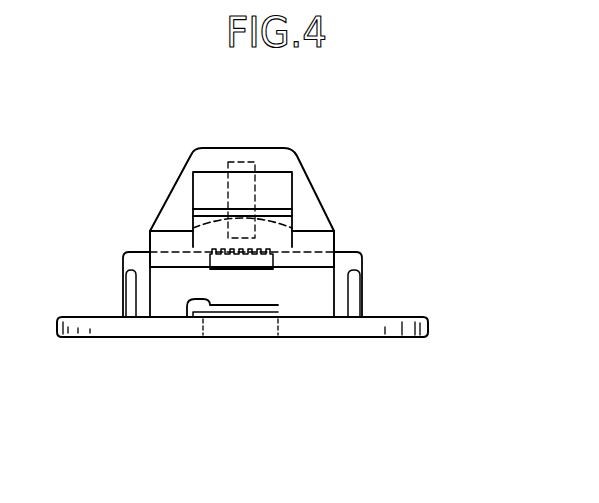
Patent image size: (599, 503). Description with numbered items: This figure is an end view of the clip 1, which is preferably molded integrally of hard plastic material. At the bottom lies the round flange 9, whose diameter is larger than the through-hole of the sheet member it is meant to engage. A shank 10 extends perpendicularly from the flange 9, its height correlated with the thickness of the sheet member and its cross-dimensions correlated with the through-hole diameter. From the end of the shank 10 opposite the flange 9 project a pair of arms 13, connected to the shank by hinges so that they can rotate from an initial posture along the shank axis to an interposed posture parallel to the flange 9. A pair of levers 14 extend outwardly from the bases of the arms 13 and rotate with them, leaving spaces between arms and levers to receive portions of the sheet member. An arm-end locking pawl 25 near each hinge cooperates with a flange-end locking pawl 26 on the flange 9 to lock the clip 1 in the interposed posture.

The clip 1 is at (442, 200).
The round flange 9 is at (390, 332).
The shank 10 is at (165, 300).
The arms 13 is at (290, 158).
The levers 14 is at (287, 202).
The arm-end locking pawl 25 is at (272, 260).
The flange-end locking pawl 26 is at (192, 313).